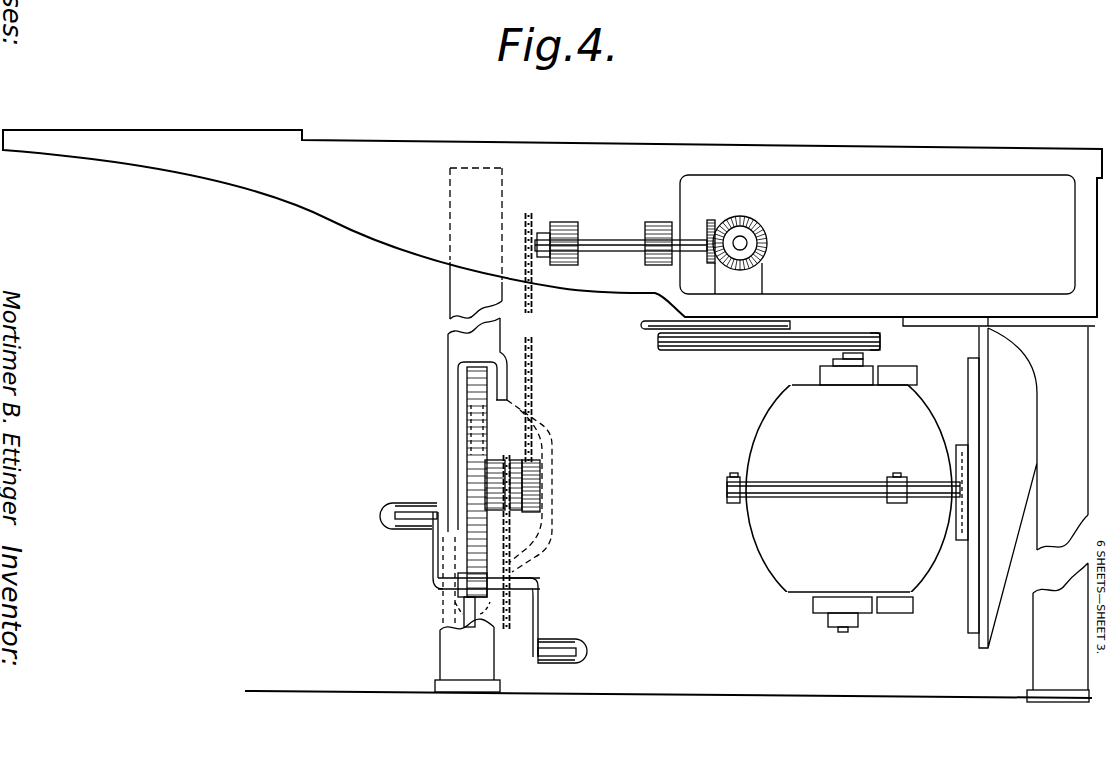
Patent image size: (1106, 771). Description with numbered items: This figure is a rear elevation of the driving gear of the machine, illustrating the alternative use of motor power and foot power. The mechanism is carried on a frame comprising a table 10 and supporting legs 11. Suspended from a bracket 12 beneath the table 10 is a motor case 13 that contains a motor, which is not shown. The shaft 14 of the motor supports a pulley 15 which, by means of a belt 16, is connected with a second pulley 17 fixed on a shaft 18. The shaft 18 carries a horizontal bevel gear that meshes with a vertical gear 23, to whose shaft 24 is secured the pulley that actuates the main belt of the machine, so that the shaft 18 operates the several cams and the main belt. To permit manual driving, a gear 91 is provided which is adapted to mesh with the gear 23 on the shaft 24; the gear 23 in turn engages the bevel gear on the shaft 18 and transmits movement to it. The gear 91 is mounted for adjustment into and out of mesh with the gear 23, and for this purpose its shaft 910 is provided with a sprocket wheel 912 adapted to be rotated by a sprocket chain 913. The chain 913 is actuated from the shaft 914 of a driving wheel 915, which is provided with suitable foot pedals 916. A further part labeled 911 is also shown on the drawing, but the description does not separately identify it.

The table 10 is at (552, 228).
The supporting legs 11 is at (762, 435).
The bracket 12 is at (957, 540).
The motor case 13 is at (843, 497).
The shaft 14 is at (863, 357).
The pulley 15 is at (882, 339).
The belt 16 is at (746, 345).
The second pulley 17 is at (658, 350).
The shaft 18 is at (650, 320).
The vertical gear 23 is at (765, 237).
The shaft 24 is at (745, 246).
The gear 91 is at (712, 218).
The shaft 910 is at (621, 234).
The drum pulley 911 is at (632, 267).
The sprocket wheel 912 is at (524, 228).
The sprocket chain 913 is at (537, 350).
The shaft 914 is at (545, 478).
The driving wheel 915 is at (470, 417).
The foot pedals 916 is at (563, 638).